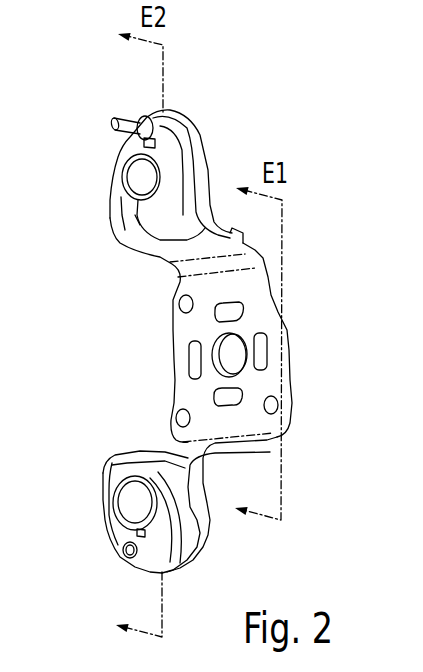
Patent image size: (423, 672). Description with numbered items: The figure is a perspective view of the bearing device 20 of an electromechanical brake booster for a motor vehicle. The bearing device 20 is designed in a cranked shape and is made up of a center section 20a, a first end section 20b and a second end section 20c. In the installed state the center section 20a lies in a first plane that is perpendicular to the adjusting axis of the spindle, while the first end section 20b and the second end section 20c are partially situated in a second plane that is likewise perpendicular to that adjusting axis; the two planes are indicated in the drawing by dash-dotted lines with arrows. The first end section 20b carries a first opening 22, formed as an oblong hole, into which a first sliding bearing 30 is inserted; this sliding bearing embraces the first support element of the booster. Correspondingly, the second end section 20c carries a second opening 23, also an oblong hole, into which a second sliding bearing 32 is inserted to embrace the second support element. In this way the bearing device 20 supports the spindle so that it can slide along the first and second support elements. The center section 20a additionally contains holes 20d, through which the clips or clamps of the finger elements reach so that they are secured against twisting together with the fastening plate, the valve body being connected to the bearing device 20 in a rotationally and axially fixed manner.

The bearing device 20 is at (201, 341).
The center section 20a is at (270, 352).
The first end section 20b is at (115, 203).
The second end section 20c is at (107, 485).
The holes 20d is at (227, 313).
The first opening 22 is at (140, 220).
The second opening 23 is at (143, 470).
The first sliding bearing 30 is at (128, 143).
The second sliding bearing 32 is at (113, 527).